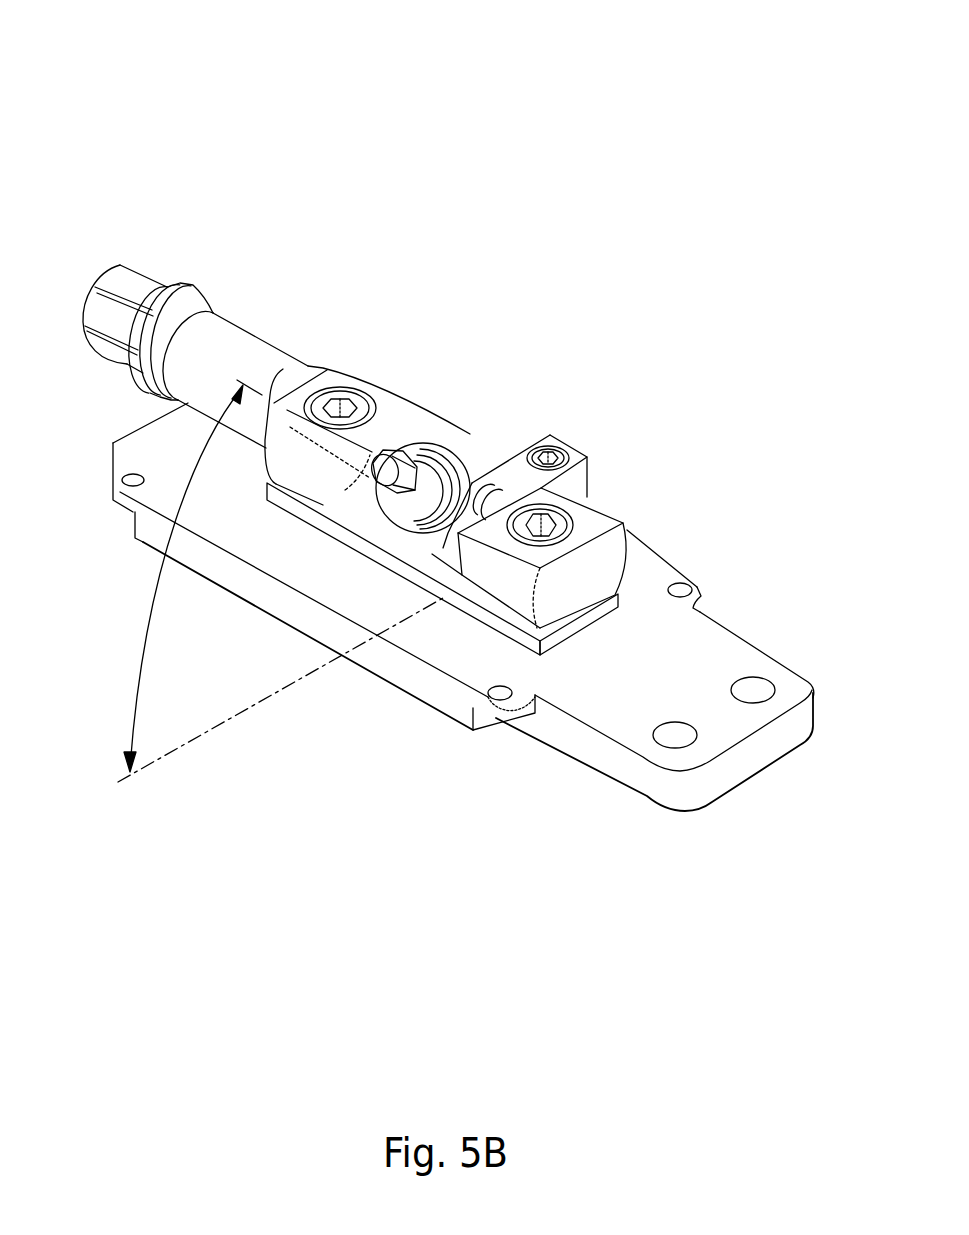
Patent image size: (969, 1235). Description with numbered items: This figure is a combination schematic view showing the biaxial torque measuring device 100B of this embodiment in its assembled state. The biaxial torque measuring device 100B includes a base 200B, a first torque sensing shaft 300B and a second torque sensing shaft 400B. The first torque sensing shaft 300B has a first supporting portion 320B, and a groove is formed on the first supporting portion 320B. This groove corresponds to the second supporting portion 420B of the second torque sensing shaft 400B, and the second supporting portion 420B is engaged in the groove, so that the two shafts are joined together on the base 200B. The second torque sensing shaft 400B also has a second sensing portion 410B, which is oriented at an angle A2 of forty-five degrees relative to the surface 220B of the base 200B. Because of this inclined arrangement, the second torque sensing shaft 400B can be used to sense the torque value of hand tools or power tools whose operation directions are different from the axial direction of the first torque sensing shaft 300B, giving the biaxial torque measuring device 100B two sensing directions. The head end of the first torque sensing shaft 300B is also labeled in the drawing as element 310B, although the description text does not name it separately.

The biaxial torque measuring device 100B is at (171, 37).
The base 200B is at (760, 670).
The surface 220B is at (707, 643).
The first torque sensing shaft 300B is at (258, 357).
The head portion of rod 310B is at (125, 277).
The first supporting portion 320B is at (400, 430).
The second torque sensing shaft 400B is at (490, 452).
The second sensing portion 410B is at (380, 466).
The second supporting portion 420B is at (587, 480).
The angle A2 is at (268, 583).